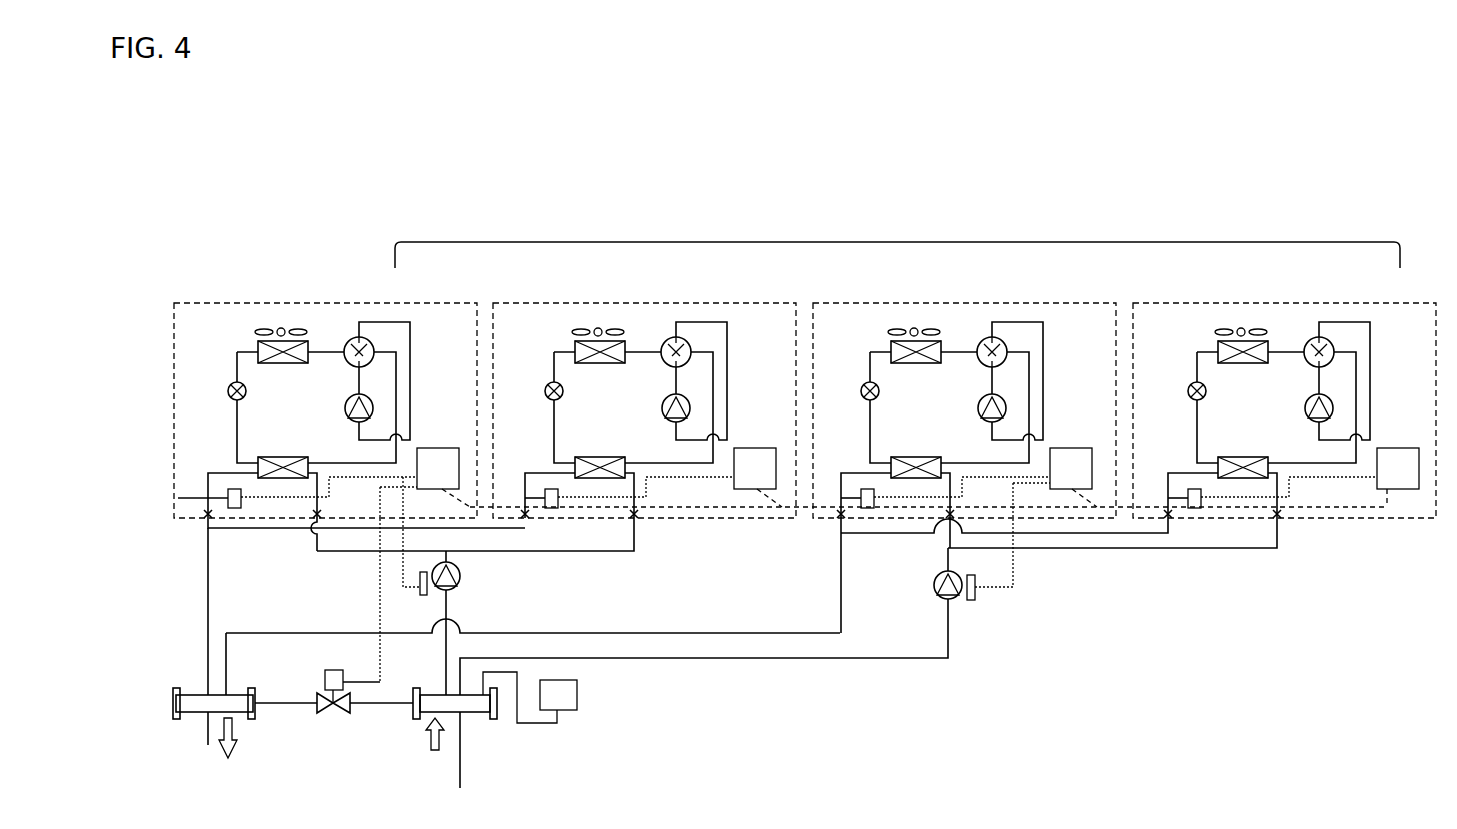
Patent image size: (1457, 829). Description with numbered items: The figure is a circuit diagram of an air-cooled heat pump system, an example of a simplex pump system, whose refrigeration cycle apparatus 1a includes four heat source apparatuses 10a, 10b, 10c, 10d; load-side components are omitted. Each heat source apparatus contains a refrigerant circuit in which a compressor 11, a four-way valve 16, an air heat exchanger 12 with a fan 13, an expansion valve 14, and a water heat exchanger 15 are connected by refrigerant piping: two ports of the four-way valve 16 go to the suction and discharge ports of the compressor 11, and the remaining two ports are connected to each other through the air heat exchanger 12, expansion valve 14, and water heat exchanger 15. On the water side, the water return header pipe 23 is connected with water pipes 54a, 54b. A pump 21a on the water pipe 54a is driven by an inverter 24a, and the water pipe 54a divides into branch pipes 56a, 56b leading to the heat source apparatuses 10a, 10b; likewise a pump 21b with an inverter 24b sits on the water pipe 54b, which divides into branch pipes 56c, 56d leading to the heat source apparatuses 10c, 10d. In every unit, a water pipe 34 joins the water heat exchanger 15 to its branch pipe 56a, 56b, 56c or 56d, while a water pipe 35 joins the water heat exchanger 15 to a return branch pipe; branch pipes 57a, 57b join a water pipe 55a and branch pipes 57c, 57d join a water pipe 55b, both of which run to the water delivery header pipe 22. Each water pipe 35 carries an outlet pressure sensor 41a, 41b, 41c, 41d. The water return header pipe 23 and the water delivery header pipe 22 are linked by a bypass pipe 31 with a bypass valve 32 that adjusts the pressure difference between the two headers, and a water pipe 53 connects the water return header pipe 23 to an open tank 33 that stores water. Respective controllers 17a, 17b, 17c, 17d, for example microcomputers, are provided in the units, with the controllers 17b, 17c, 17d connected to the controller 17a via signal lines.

The refrigeration cycle apparatus 1a is at (897, 242).
The heat source apparatus 10a is at (425, 303).
The heat source apparatus 10b is at (742, 303).
The heat source apparatus 10c is at (1058, 303).
The heat source apparatus 10d is at (1385, 303).
The compressor 11 is at (346, 410).
The air heat exchanger 12 is at (294, 365).
The fan 13 is at (252, 331).
The expansion valve 14 is at (229, 391).
The water heat exchanger 15 is at (272, 456).
The four-way valve 16 is at (348, 343).
The controller 17a is at (449, 447).
The controller 17b is at (766, 447).
The controller 17c is at (1082, 447).
The controller 17d is at (1409, 447).
The pump 21a is at (462, 574).
The pump 21b is at (932, 590).
The water delivery header pipe 22 is at (197, 691).
The water return header pipe 23 is at (471, 712).
The inverter 24a is at (418, 594).
The inverter 24b is at (974, 600).
The bypass pipe 31 is at (364, 708).
The bypass valve 32 is at (322, 682).
The tank 33 is at (578, 692).
The water pipe 34 is at (308, 489).
The water pipe 35 is at (230, 470).
The outlet pressure sensor 41a is at (196, 498).
The outlet pressure sensor 41b is at (540, 487).
The outlet pressure sensor 41c is at (856, 487).
The outlet pressure sensor 41d is at (1183, 487).
The water pipe 53 is at (540, 727).
The water pipe 54a is at (443, 654).
The water pipe 54b is at (824, 660).
The water pipe 55a is at (210, 596).
The water pipe 55b is at (664, 630).
The branch pipe 56a is at (346, 556).
The branch pipe 56b is at (554, 554).
The branch pipe 56c is at (946, 536).
The branch pipe 56d is at (1224, 548).
The branch pipe 57a is at (205, 528).
The branch pipe 57b is at (294, 534).
The branch pipe 57c is at (838, 526).
The branch pipe 57d is at (1137, 536).